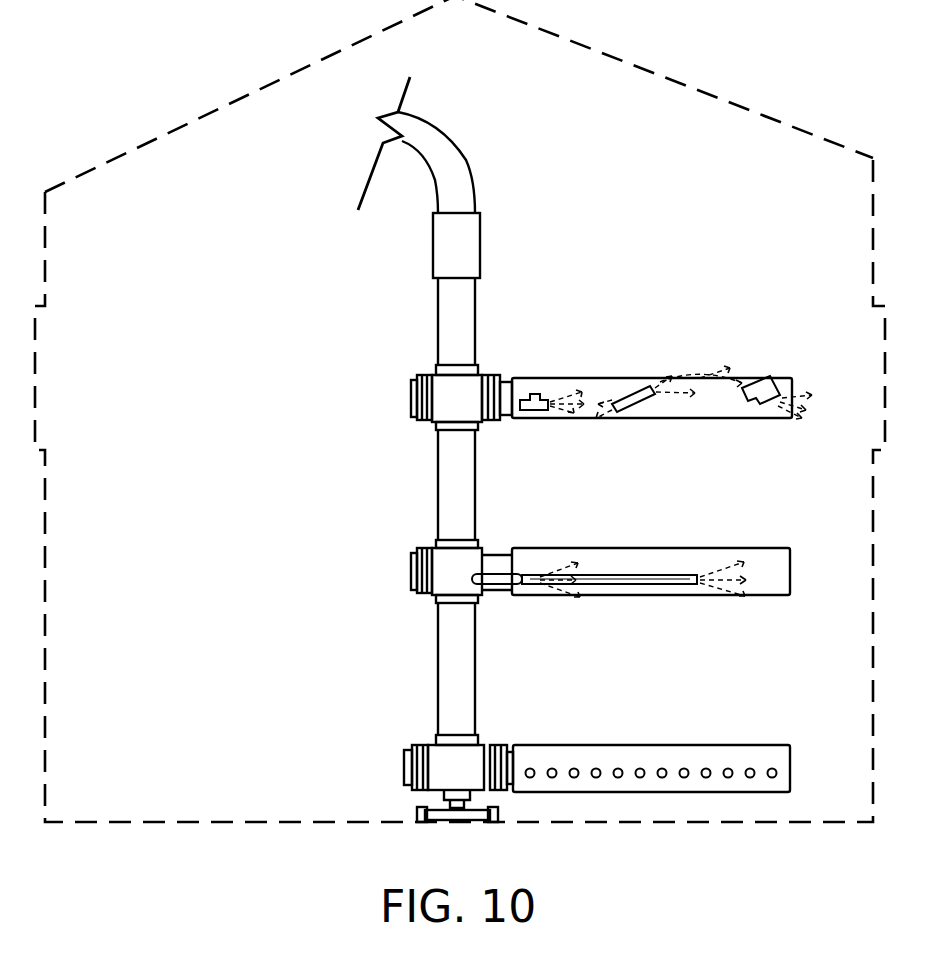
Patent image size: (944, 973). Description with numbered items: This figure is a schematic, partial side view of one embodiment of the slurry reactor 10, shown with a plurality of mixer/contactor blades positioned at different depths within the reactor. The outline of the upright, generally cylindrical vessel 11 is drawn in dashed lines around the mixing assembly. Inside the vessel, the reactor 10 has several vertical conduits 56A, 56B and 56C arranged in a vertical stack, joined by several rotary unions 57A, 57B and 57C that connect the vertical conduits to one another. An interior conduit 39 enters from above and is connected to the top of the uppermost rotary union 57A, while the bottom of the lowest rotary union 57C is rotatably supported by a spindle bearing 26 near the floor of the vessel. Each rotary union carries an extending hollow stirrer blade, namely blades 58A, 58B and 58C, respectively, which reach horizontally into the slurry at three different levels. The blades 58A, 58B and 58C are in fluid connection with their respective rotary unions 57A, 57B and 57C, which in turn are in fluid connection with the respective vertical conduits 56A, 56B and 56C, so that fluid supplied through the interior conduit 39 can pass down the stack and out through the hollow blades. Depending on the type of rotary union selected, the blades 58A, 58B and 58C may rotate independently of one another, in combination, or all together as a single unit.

The slurry reactor 10 is at (214, 82).
The cylindrical vessel 11 is at (855, 577).
The spindle bearing 26 is at (472, 815).
The interior conduit 39 is at (452, 165).
The vertical conduit 56A is at (455, 333).
The vertical conduit 56B is at (455, 487).
The vertical conduit 56C is at (455, 677).
The rotary union 57A is at (462, 385).
The rotary union 57B is at (466, 552).
The rotary union 57C is at (462, 748).
The hollow stirrer blade 58A is at (780, 378).
The hollow stirrer blade 58B is at (778, 548).
The hollow stirrer blade 58C is at (775, 746).